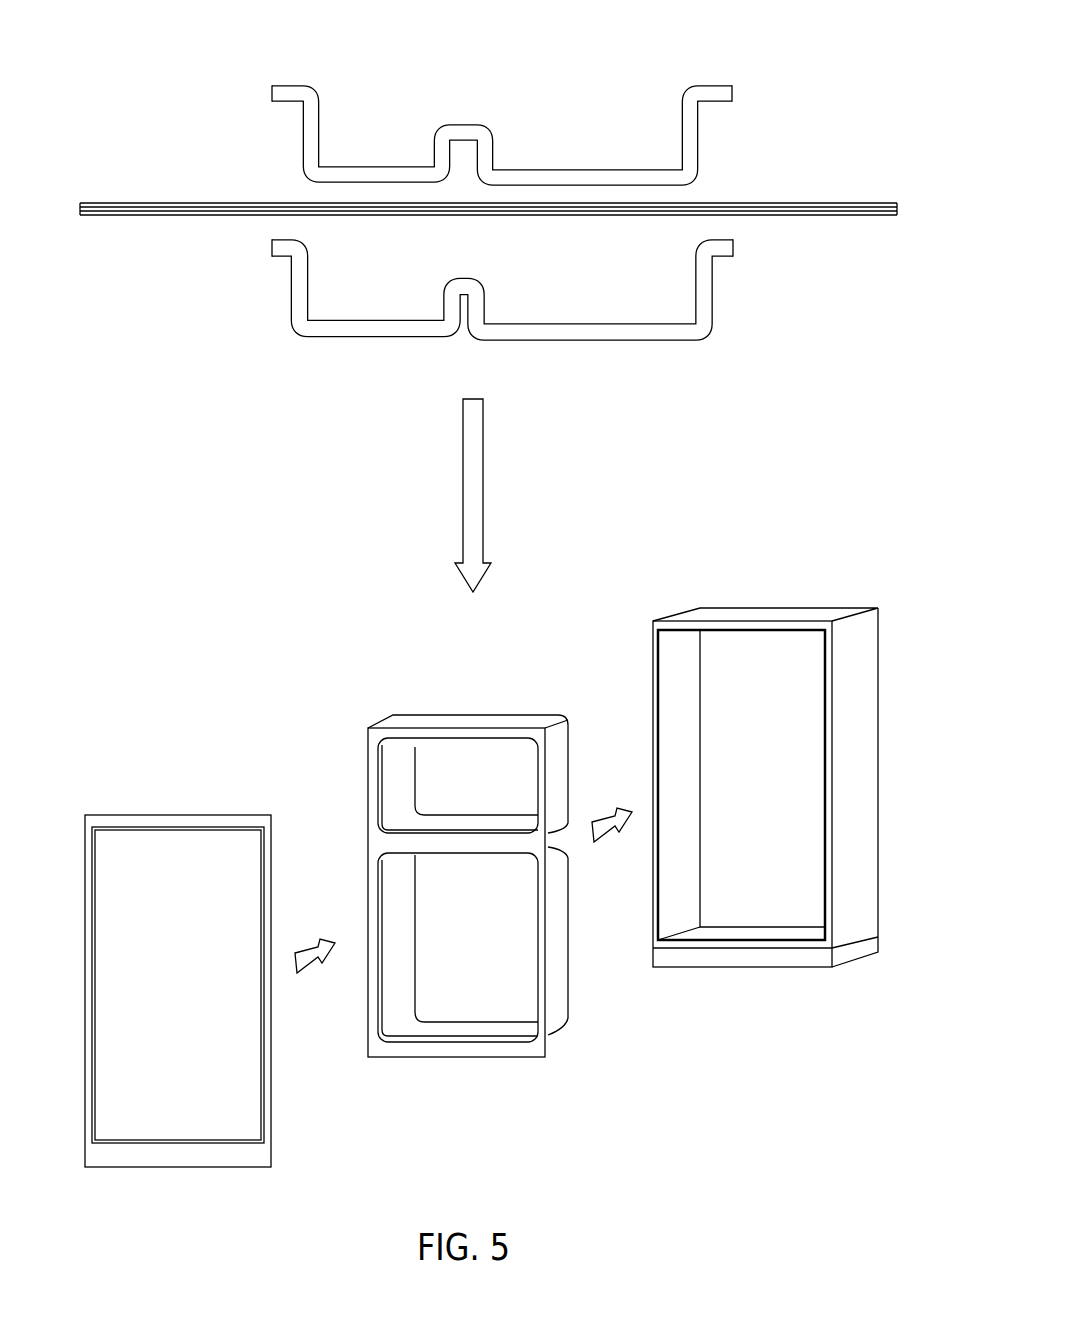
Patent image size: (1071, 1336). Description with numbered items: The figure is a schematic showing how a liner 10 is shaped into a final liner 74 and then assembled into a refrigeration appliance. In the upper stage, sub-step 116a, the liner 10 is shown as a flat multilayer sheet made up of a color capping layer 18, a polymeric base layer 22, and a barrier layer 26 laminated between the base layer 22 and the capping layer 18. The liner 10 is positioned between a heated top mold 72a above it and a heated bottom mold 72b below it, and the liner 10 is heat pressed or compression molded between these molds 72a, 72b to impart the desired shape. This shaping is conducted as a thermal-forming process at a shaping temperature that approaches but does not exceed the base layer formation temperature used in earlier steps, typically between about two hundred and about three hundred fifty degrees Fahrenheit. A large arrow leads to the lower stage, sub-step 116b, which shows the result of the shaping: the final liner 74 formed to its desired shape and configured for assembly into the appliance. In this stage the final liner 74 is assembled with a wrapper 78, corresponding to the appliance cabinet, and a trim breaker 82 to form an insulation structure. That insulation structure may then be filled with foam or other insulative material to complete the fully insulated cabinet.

The sub-step of textured pattern forming step 116a is at (175, 64).
The liner 10 is at (170, 201).
The color capping layer 18 is at (862, 215).
The polymeric base layer 22 is at (898, 208).
The barrier layer 26 is at (851, 203).
The heated top mold 72a is at (694, 135).
The heated bottom mold 72b is at (703, 283).
The sub-step of textured pattern forming step 116b is at (217, 626).
The final liner 74 is at (475, 722).
The wrapper 78 is at (770, 608).
The trim breaker 82 is at (171, 822).